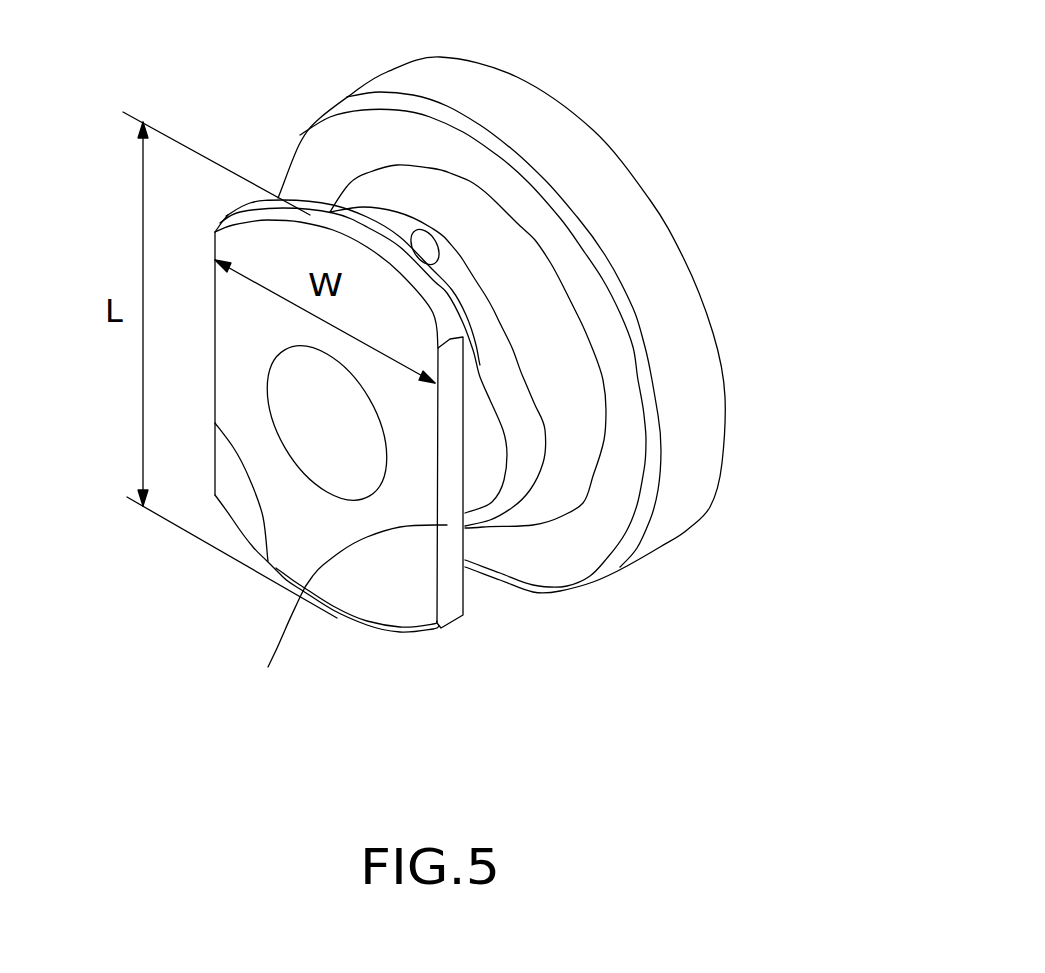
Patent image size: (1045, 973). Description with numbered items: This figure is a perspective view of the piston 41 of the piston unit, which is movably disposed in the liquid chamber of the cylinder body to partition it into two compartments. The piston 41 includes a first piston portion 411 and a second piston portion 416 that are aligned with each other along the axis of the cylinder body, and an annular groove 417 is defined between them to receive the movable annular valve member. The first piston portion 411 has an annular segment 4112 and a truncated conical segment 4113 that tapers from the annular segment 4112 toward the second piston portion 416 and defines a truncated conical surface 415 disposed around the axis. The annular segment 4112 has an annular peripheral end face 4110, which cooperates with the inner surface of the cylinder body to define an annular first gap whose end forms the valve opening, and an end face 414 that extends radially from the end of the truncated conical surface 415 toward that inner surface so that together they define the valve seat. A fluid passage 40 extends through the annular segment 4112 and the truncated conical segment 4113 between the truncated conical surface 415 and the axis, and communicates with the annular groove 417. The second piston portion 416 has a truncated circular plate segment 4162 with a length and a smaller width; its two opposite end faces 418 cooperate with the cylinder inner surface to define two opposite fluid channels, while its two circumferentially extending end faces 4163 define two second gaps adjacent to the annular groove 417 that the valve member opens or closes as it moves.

The fluid passage 40 is at (427, 245).
The piston 41 is at (667, 550).
The first piston portion 411 is at (685, 698).
The annular peripheral end face 4110 is at (683, 498).
The annular segment 4112 is at (648, 547).
The truncated conical segment 4113 is at (564, 518).
The end face 414 is at (515, 200).
The truncated conical surface 415 is at (562, 362).
The second piston portion 416 is at (474, 525).
The truncated circular plate segment 4162 is at (377, 598).
The circumferentially extending end faces 4163 is at (310, 210).
The annular groove 417 is at (392, 233).
The opposite end faces 418 is at (268, 561).